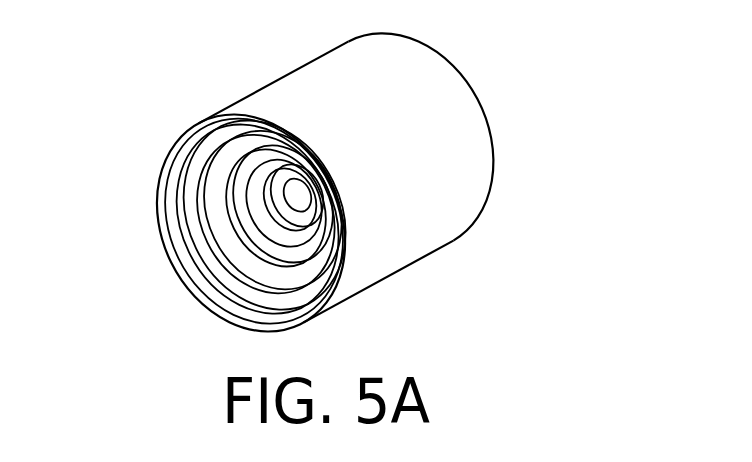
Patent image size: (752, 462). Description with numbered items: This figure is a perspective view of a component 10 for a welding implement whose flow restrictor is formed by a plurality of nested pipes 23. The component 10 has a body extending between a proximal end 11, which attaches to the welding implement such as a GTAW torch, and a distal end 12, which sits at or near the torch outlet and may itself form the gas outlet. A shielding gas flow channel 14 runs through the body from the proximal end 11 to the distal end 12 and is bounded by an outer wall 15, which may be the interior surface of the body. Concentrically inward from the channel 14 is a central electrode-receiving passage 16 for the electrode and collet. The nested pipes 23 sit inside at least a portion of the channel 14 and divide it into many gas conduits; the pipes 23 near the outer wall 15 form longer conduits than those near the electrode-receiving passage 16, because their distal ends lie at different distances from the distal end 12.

The component 10 is at (289, 166).
The proximal end 11 is at (369, 172).
The distal end 12 is at (178, 278).
The shielding gas flow channel 14 is at (288, 227).
The outer wall 15 is at (307, 87).
The electrode-receiving passage 16 is at (305, 195).
The nested pipes 23 is at (212, 196).